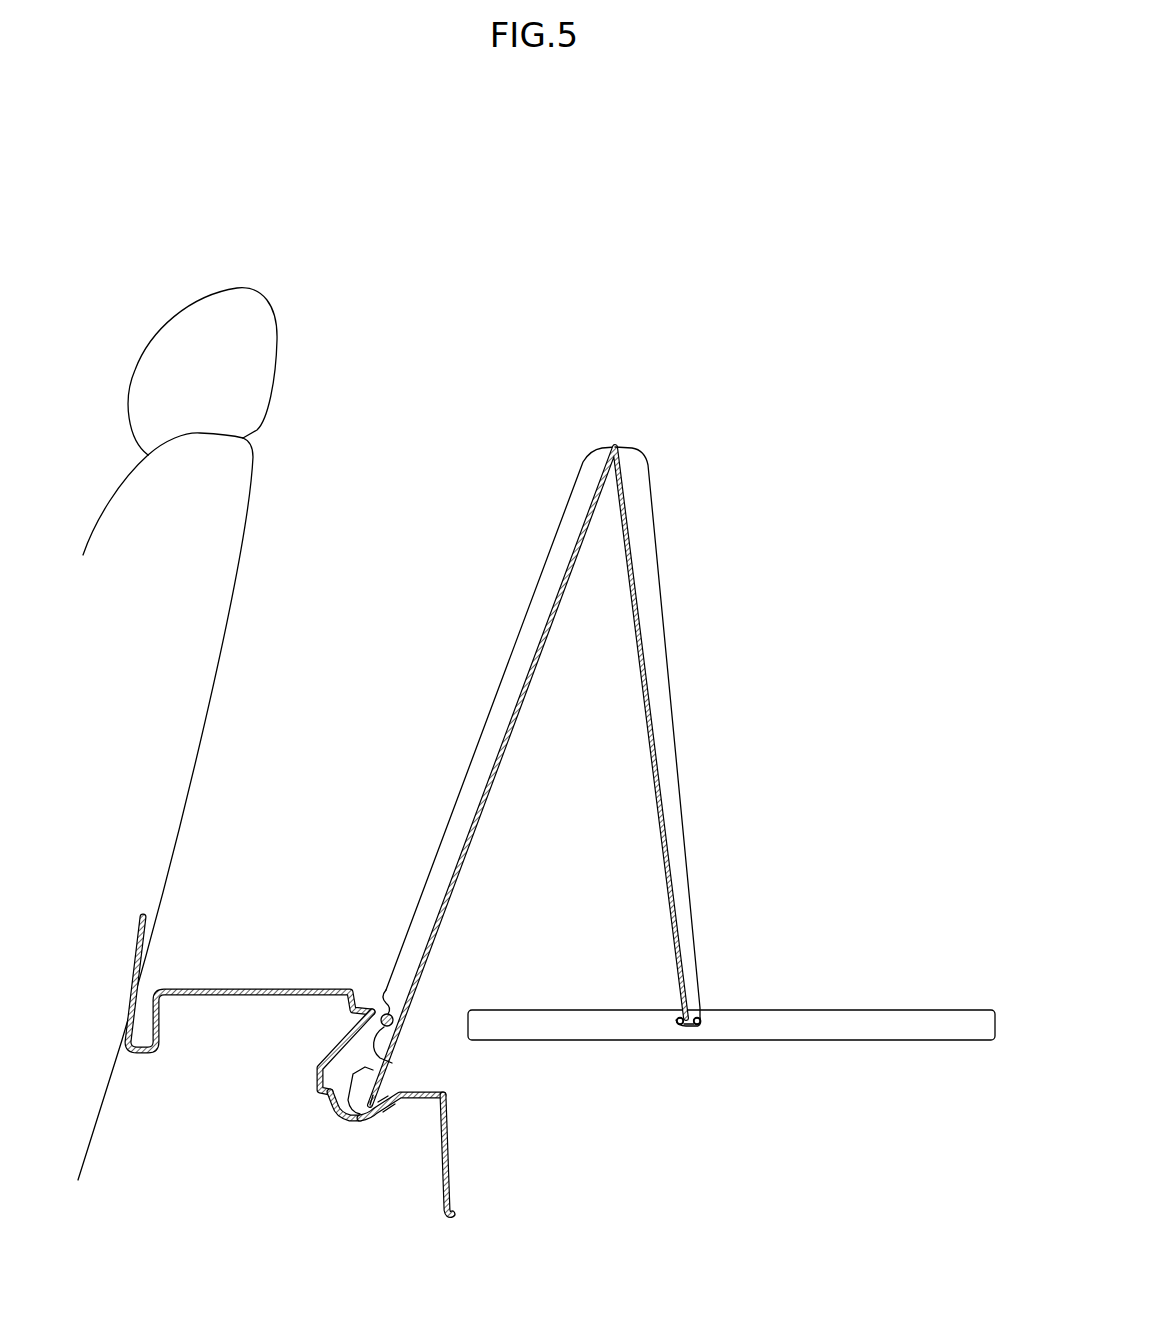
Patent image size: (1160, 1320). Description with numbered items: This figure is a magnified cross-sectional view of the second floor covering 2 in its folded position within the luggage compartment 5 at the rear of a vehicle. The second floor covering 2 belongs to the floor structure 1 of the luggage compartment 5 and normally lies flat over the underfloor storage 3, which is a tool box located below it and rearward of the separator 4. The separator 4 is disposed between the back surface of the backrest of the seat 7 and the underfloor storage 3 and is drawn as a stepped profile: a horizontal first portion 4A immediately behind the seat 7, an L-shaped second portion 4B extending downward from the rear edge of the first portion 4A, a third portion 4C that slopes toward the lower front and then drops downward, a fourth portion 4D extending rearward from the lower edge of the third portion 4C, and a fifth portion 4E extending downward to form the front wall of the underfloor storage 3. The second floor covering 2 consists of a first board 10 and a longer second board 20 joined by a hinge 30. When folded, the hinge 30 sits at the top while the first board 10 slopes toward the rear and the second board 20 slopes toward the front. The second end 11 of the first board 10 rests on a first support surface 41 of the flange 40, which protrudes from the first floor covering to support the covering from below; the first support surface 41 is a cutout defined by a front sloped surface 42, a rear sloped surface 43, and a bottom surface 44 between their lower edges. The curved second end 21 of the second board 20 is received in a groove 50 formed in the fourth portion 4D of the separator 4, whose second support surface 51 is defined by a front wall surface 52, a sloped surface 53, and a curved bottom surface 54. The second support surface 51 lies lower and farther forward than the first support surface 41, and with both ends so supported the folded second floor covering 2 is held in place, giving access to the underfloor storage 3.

The floor structure 1 is at (785, 198).
The second floor covering 2 is at (715, 385).
The underfloor storage 3 is at (930, 1105).
The separator 4 is at (188, 1048).
The first portion 4A is at (245, 992).
The second portion 4B is at (340, 1010).
The third portion 4C is at (320, 1080).
The fourth portion 4D is at (333, 1098).
The fifth portion 4E is at (442, 1183).
The luggage compartment 5 is at (902, 703).
The seat 7 is at (223, 566).
The first board 10 is at (657, 560).
The second end 11 is at (683, 1013).
The second board 20 is at (547, 550).
The second end 21 is at (365, 1082).
The hinge 30 is at (615, 446).
The flange 40 is at (797, 1010).
The first support surface 41 is at (762, 1112).
The front sloped surface 42 is at (688, 1023).
The rear sloped surface 43 is at (693, 1023).
The bottom surface 44 is at (697, 1015).
The groove 50 is at (405, 1052).
The second support surface 51 is at (497, 1068).
The front wall surface 52 is at (377, 1092).
The sloped surface 53 is at (383, 1105).
The bottom surface 54 is at (388, 1112).